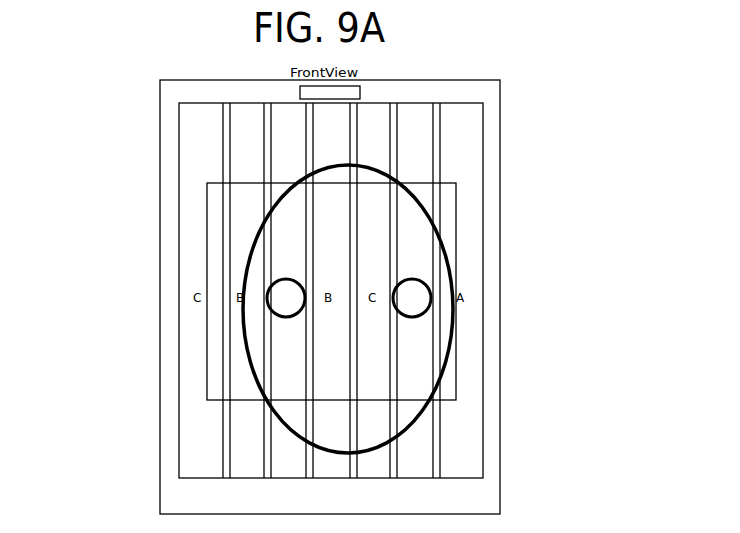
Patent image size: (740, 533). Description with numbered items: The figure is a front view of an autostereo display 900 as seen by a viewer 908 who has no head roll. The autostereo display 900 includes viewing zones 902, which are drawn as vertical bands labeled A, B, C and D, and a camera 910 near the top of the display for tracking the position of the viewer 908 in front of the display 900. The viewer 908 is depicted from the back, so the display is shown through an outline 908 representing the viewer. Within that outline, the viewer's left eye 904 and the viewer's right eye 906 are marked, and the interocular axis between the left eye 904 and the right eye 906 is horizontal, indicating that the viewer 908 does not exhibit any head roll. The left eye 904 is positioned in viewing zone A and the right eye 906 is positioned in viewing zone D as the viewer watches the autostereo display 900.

The autostereo display 900 is at (513, 186).
The viewing zones 902 is at (283, 162).
The viewer's left eye 904 is at (268, 298).
The viewer's right eye 906 is at (433, 300).
The viewer 908 is at (257, 243).
The camera 910 is at (360, 92).